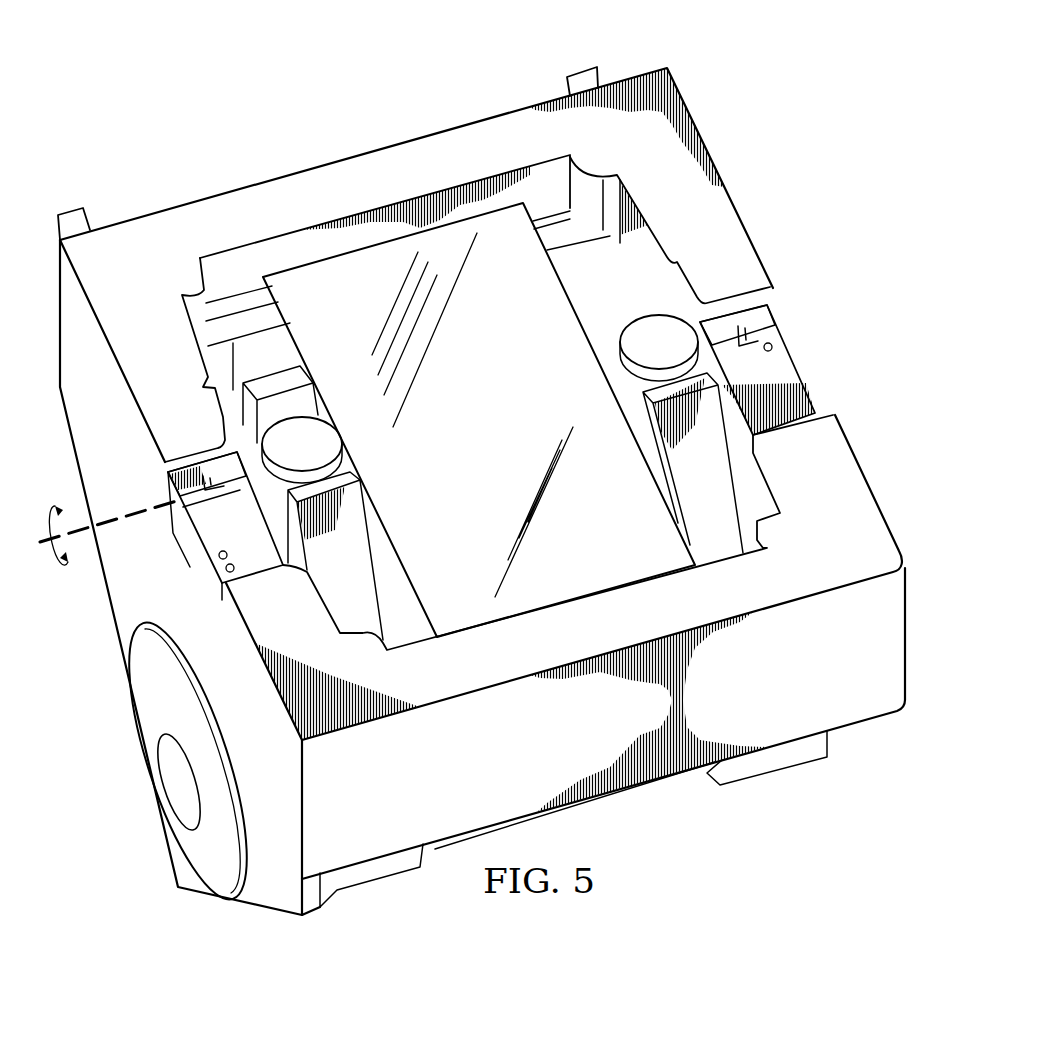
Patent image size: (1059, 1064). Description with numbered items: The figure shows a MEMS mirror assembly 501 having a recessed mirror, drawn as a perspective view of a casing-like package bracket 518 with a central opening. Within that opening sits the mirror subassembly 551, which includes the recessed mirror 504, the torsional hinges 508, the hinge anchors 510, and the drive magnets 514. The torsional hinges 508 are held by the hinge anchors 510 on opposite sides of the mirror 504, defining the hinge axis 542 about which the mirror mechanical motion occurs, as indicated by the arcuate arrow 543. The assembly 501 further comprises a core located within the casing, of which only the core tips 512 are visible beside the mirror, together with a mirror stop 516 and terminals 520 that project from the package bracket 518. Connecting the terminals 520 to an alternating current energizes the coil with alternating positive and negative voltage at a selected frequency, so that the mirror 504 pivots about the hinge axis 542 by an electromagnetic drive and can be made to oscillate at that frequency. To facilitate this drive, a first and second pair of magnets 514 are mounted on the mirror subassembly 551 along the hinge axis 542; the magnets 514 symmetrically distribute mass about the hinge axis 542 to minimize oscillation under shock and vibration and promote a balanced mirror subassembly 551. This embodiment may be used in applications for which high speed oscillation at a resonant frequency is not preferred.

The MEMS mirror assembly 501 is at (332, 101).
The recessed mirror 504 is at (508, 426).
The torsional hinges 508 is at (767, 342).
The hinge anchors 510 is at (787, 385).
The core tips 512 is at (667, 257).
The drive magnets 514 is at (323, 451).
The mirror stop 516 is at (240, 322).
The package bracket 518 is at (867, 498).
The terminals 520 is at (72, 208).
The hinge axis 542 is at (125, 523).
The arcuate arrow 543 is at (67, 563).
The mirror subassembly 551 is at (802, 343).